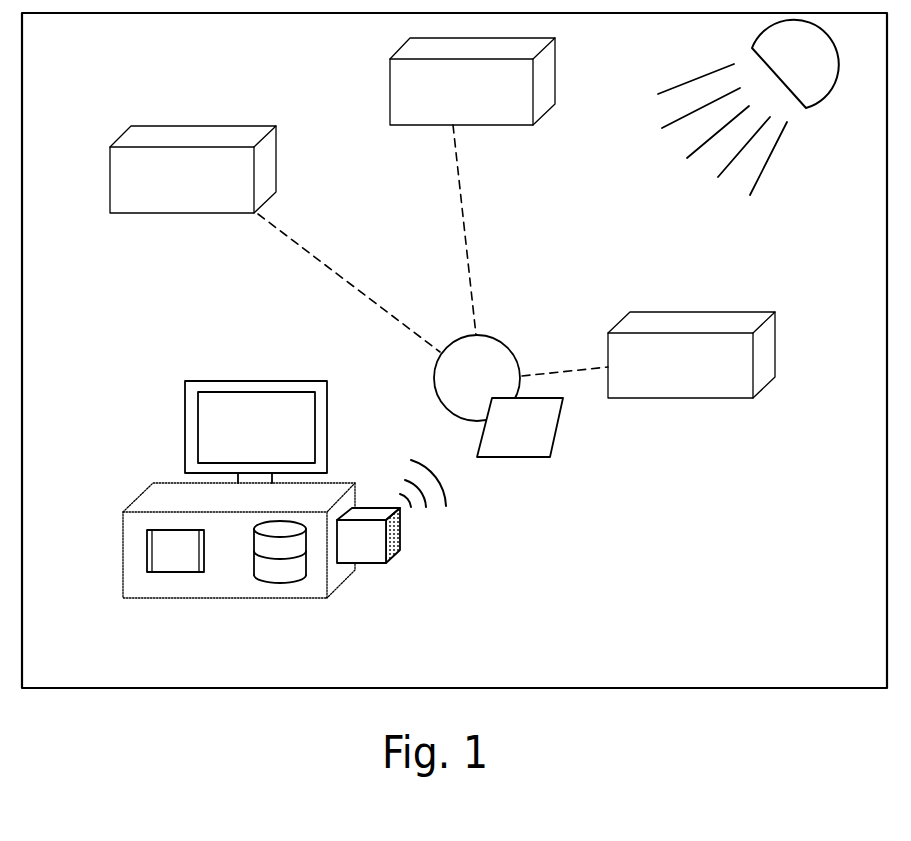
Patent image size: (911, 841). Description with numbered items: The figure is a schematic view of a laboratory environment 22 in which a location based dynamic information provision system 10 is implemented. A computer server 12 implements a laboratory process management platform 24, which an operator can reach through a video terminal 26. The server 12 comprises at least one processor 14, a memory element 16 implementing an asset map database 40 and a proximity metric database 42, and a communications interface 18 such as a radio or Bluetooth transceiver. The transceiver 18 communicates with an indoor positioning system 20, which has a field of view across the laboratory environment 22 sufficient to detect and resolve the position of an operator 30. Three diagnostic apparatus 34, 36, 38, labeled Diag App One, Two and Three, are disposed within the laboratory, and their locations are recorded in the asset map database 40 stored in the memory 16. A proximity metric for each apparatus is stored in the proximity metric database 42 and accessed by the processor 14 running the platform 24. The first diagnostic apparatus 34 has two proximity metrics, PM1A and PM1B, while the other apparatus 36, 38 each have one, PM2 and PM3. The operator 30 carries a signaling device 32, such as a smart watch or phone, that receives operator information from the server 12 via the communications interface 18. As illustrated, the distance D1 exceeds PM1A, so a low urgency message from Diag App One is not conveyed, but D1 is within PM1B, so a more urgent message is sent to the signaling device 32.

The location based dynamic information provision system 10 is at (454, 350).
The computer server 12 is at (171, 483).
The processor 14 is at (147, 549).
The memory element 16 is at (273, 577).
The communications interface 18 is at (393, 528).
The indoor positioning system 20 is at (815, 95).
The laboratory environment 22 is at (887, 475).
The laboratory process management platform 24 is at (306, 402).
The video terminal 26 is at (266, 399).
The operator 30 is at (434, 361).
The signaling device 32 is at (545, 442).
The first diagnostic apparatus 34 is at (264, 160).
The diagnostic apparatus 36 is at (543, 72).
The diagnostic apparatus 38 is at (760, 342).
The asset map database 40 is at (261, 573).
The proximity metric database 42 is at (300, 544).